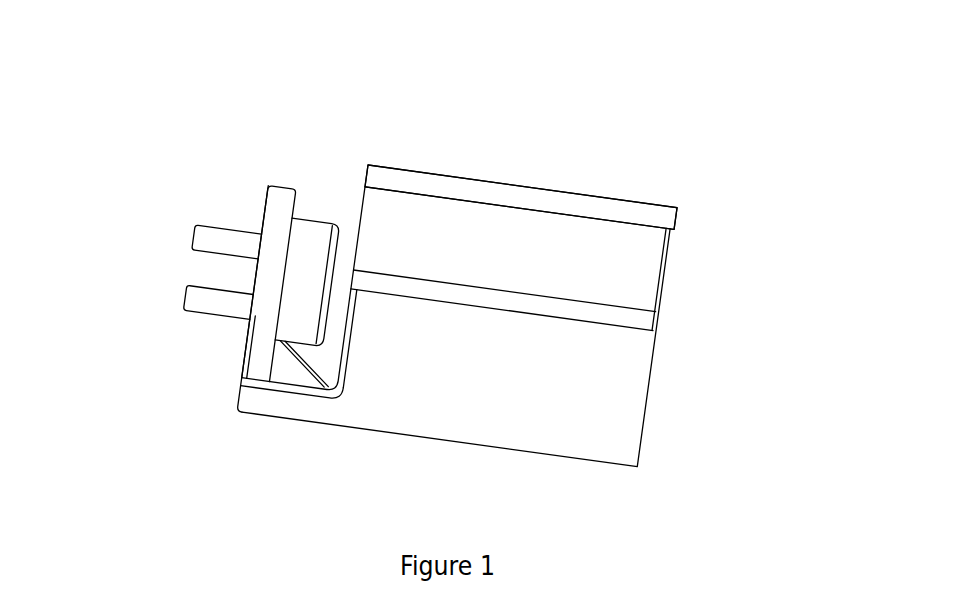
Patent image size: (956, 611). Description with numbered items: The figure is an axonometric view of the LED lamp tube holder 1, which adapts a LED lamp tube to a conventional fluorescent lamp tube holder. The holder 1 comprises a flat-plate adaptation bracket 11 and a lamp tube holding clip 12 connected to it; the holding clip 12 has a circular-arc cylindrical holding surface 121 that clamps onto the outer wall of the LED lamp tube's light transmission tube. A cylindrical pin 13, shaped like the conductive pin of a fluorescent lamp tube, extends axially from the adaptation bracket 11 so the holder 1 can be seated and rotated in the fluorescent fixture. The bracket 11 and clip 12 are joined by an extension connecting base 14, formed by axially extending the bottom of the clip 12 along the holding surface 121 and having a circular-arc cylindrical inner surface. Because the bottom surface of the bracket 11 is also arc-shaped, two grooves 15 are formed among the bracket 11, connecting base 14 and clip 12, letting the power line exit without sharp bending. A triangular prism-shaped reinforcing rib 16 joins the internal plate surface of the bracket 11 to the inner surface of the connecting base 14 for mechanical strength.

The LED lamp tube holder 1 is at (717, 163).
The adaptation bracket 11 is at (280, 212).
The lamp tube holding clip 12 is at (497, 375).
The holding surface 121 is at (500, 253).
The pin 13 is at (215, 300).
The extension connecting base 14 is at (293, 404).
The groove 15 is at (348, 250).
The reinforcing rib 16 is at (288, 367).